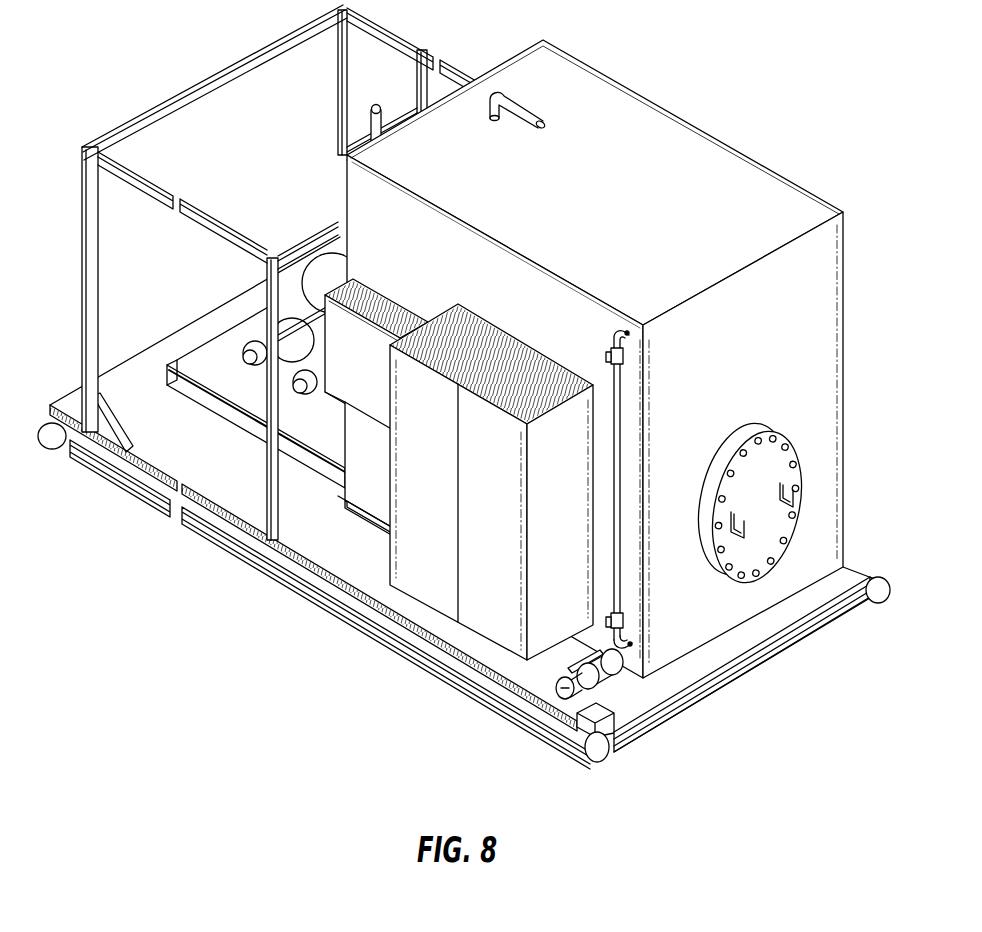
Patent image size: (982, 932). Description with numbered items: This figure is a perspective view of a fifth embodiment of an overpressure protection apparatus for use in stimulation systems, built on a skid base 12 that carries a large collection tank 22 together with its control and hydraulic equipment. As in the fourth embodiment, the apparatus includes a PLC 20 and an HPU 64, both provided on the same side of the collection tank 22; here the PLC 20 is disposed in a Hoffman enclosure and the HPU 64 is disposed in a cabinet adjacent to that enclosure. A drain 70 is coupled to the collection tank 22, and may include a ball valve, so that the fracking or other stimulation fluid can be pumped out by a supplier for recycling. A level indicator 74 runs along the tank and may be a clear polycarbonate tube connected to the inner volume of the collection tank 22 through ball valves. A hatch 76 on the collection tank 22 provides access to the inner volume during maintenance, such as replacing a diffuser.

The skid base 12 is at (98, 460).
The PLC 20 is at (362, 387).
The collection tank 22 is at (358, 200).
The HPU 64 is at (452, 620).
The drain 70 is at (566, 688).
The level indicator 74 is at (618, 418).
The hatch 76 is at (803, 475).